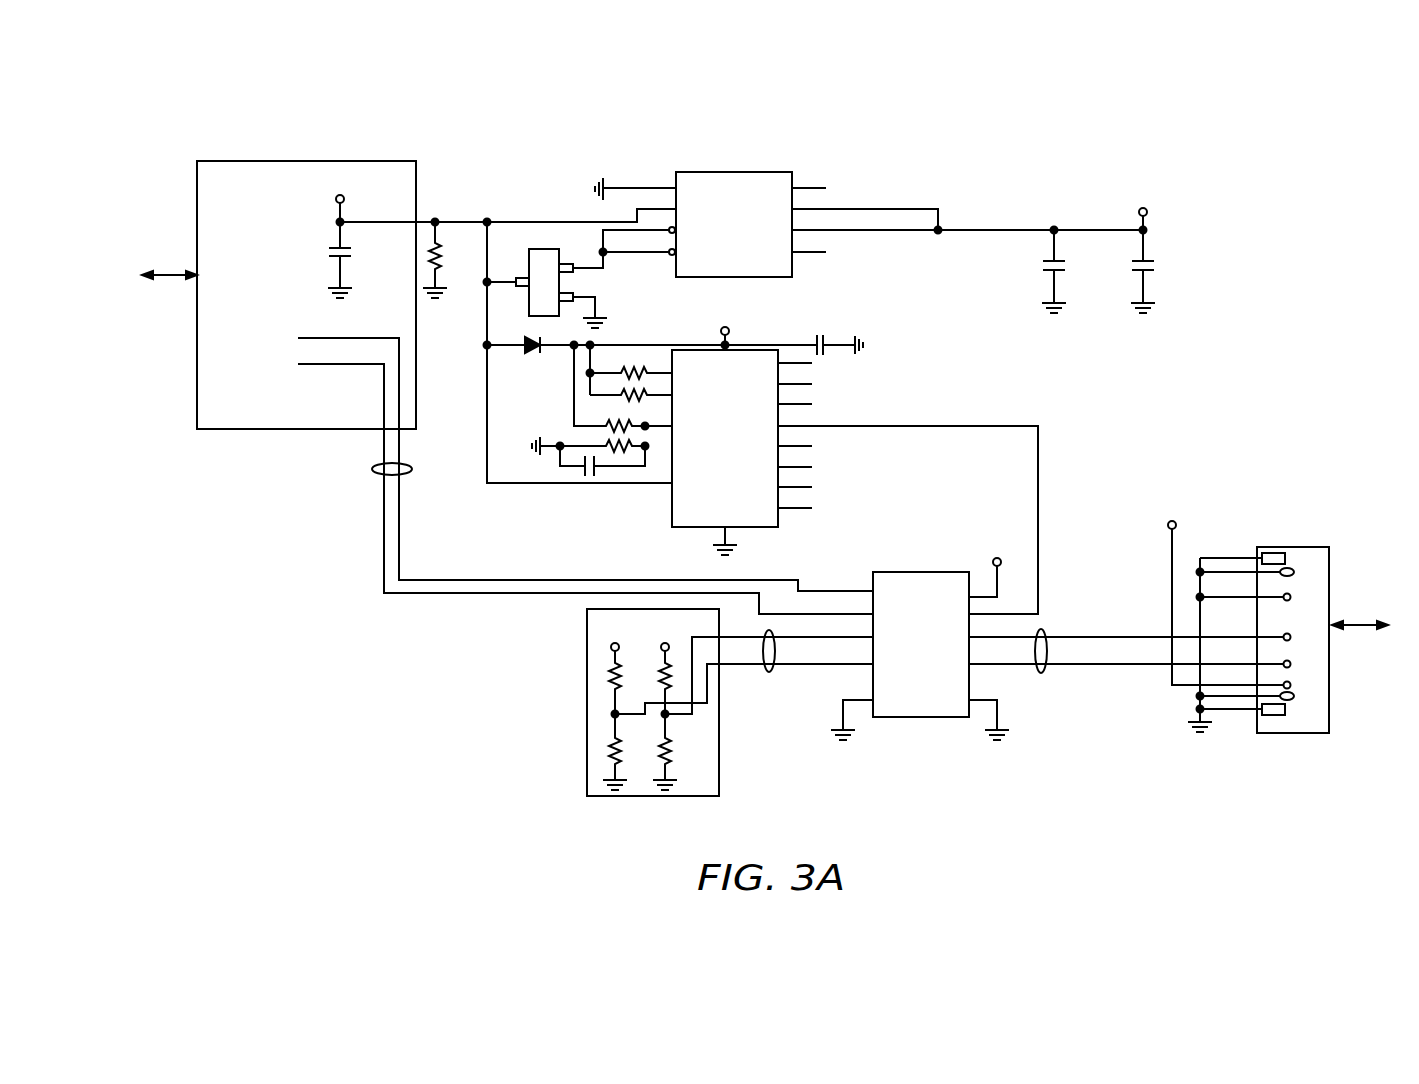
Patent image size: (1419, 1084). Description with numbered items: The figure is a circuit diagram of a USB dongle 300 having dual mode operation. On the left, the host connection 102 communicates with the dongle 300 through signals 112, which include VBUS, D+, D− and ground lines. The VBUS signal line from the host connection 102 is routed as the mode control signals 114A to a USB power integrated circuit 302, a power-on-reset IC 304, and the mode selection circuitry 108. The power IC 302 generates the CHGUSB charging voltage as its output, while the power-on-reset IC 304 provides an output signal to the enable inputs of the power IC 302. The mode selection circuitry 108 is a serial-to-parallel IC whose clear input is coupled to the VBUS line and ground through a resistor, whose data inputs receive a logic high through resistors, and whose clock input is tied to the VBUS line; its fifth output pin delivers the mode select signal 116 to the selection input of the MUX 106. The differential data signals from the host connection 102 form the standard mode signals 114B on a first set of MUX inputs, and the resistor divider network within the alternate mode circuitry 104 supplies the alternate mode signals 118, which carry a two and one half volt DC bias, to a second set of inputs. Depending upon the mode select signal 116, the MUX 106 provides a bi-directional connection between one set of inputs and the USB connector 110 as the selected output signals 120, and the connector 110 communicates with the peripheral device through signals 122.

The USB dongle 300 is at (1088, 115).
The host connection 102 is at (293, 161).
The signals 112 is at (175, 277).
The mode control signals 114A is at (452, 222).
The standard mode signals 114B is at (375, 470).
The USB power integrated circuit 302 is at (730, 172).
The power-on-reset IC 304 is at (545, 249).
The mode selection circuitry 108 is at (666, 496).
The mode select signal 116 is at (940, 426).
The multiplexer IC 106 is at (928, 572).
The alternate mode circuitry 104 is at (587, 692).
The alternate mode signals 118 is at (771, 672).
The selected output signals 120 is at (1043, 673).
The USB connector 110 is at (1332, 590).
The signals 122 is at (1352, 623).